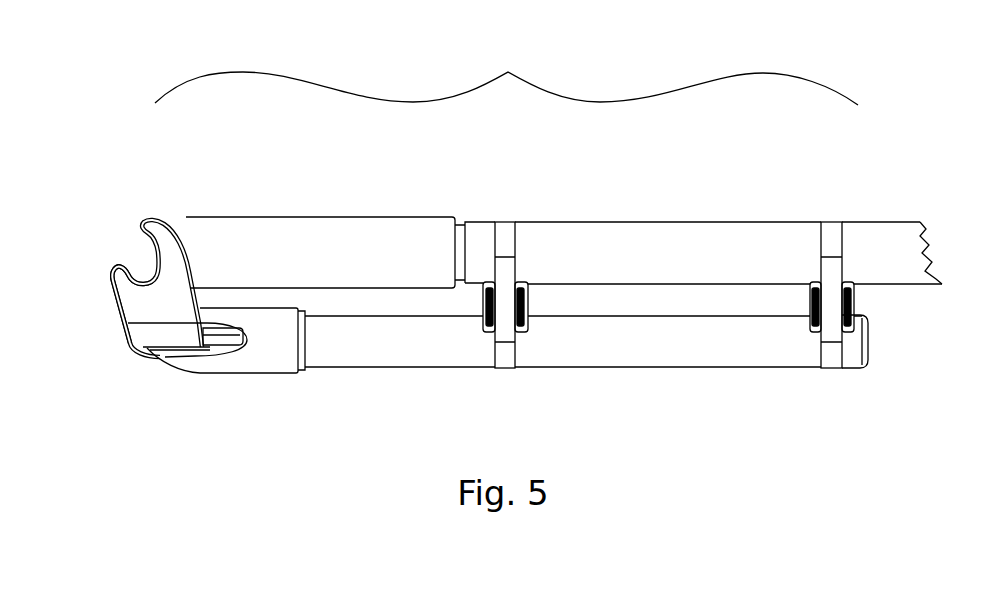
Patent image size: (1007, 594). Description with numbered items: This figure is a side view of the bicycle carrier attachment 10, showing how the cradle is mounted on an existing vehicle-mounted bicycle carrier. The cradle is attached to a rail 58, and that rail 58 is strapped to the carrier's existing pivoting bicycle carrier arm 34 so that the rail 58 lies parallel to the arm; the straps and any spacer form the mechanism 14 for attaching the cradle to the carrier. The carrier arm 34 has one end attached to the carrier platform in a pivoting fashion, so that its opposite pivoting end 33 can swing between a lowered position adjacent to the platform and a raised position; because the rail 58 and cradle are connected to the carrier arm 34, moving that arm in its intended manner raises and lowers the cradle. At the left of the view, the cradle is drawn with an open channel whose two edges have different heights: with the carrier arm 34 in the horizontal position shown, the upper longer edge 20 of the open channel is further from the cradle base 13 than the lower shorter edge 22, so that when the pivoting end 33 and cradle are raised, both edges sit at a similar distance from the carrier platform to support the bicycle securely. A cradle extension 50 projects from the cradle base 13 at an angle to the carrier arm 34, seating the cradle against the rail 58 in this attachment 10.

The bicycle carrier attachment 10 is at (506, 68).
The cradle base 13 is at (170, 333).
The mechanism for attaching cradle to carrier 14 is at (527, 203).
The upper longer edge of open channel 20 is at (143, 221).
The lower shorter edge of open channel 22 is at (115, 268).
The pivoting end of bicycle carrier arm 33 is at (193, 217).
The bicycle carrier arm 34 is at (728, 253).
The cradle extension 50 is at (220, 340).
The rail to support cradle 58 is at (507, 340).